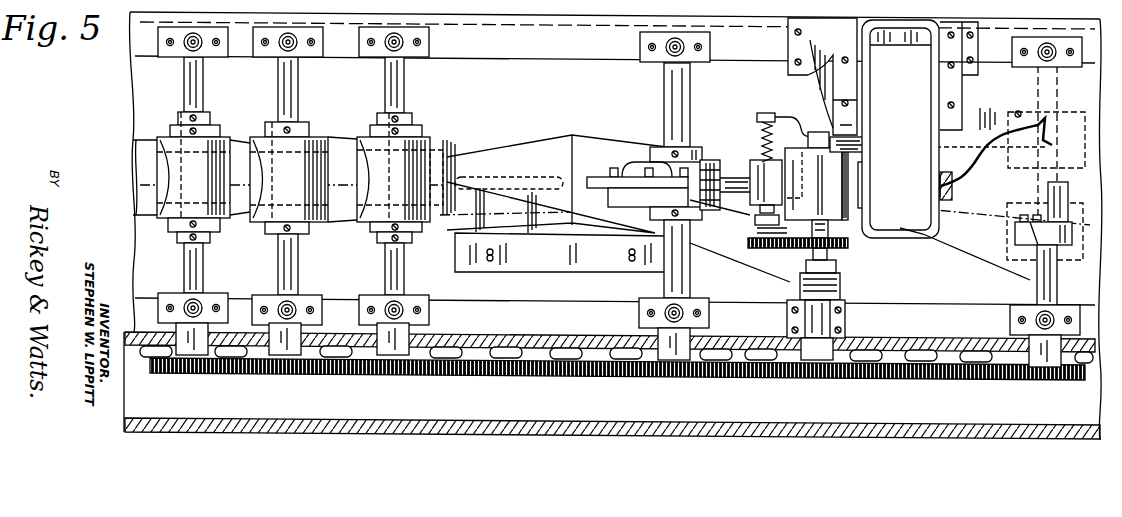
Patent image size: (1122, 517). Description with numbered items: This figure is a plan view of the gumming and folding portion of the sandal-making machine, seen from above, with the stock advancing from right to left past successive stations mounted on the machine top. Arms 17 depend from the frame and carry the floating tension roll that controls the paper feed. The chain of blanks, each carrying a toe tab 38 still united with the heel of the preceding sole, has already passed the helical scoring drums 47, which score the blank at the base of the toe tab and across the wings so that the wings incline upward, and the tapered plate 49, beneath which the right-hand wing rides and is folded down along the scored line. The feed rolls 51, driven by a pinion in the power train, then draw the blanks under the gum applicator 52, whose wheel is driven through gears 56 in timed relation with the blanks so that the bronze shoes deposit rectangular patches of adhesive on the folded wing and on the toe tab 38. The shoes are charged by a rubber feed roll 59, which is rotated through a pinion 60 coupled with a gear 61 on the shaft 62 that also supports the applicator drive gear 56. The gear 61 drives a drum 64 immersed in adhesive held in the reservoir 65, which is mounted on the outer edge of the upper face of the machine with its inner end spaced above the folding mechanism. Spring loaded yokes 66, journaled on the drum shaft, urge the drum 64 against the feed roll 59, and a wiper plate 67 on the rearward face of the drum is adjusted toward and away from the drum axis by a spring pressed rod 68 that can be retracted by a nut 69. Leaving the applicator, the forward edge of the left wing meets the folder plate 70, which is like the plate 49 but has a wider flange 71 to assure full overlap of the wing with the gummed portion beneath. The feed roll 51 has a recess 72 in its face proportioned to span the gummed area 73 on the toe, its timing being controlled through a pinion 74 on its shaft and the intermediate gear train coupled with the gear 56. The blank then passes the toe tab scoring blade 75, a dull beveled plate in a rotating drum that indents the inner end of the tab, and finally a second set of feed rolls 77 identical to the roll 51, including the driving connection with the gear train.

The arms 17 is at (979, 253).
The toe tab 38 is at (455, 222).
The helical scoring drums 47 is at (1058, 248).
The tapered plate 49 is at (993, 122).
The feed rolls 51 is at (436, 148).
The gum applicator 52 is at (663, 170).
The gears 56 is at (841, 381).
The rubber feed roll 59 is at (760, 208).
The pinion 60 is at (797, 249).
The gear 61 is at (830, 250).
The shaft 62 is at (836, 264).
The drum 64 is at (880, 210).
The reservoir 65 is at (905, 103).
The spring loaded yokes 66 is at (793, 130).
The wiper plate 67 is at (868, 160).
The spring pressed rod 68 is at (882, 200).
The nut 69 is at (955, 186).
The folder plate 70 is at (545, 273).
The flange 71 is at (455, 228).
The recess 72 is at (418, 182).
The gummed area 73 is at (447, 165).
The pinion 74 is at (393, 377).
The toe tab scoring blade 75 is at (280, 218).
The second set of feed rolls 77 is at (168, 228).